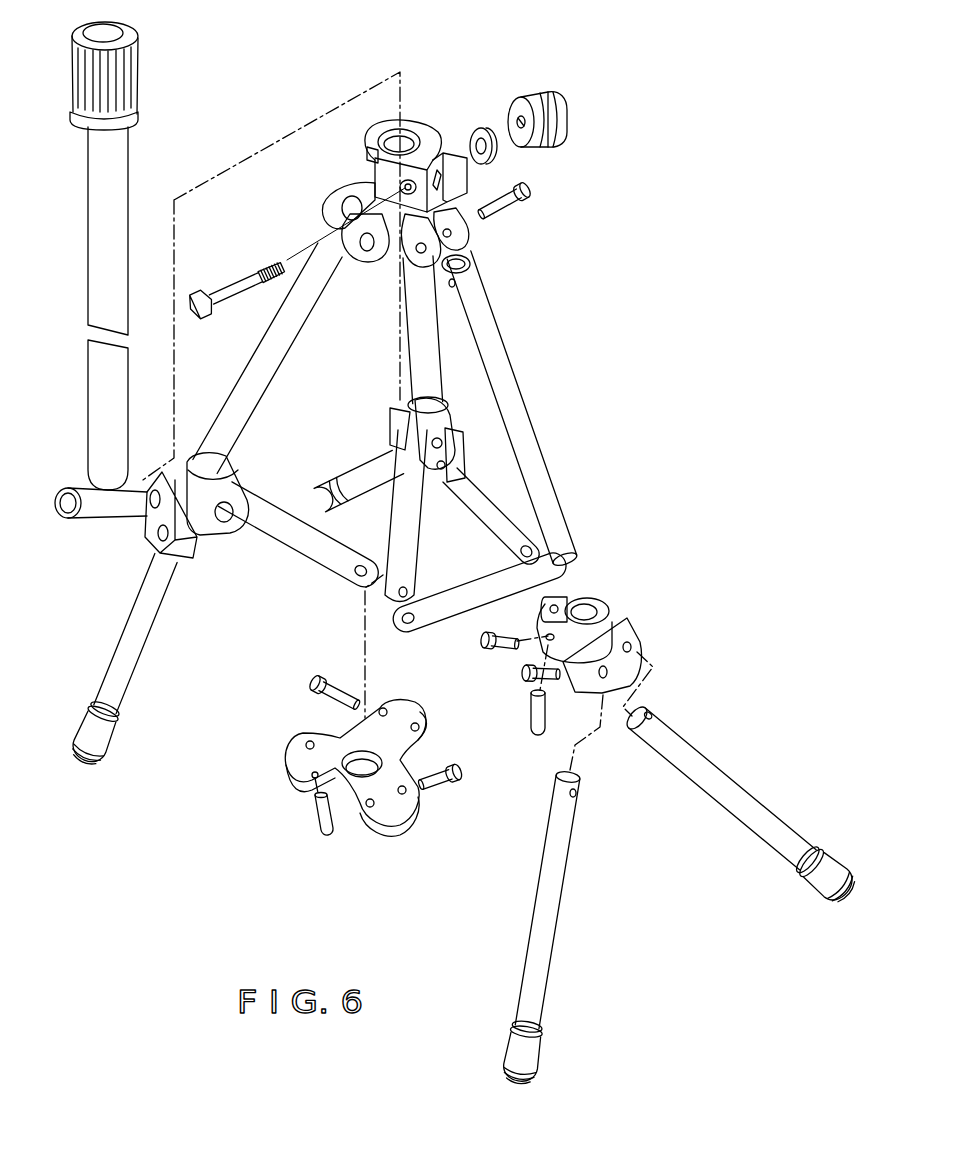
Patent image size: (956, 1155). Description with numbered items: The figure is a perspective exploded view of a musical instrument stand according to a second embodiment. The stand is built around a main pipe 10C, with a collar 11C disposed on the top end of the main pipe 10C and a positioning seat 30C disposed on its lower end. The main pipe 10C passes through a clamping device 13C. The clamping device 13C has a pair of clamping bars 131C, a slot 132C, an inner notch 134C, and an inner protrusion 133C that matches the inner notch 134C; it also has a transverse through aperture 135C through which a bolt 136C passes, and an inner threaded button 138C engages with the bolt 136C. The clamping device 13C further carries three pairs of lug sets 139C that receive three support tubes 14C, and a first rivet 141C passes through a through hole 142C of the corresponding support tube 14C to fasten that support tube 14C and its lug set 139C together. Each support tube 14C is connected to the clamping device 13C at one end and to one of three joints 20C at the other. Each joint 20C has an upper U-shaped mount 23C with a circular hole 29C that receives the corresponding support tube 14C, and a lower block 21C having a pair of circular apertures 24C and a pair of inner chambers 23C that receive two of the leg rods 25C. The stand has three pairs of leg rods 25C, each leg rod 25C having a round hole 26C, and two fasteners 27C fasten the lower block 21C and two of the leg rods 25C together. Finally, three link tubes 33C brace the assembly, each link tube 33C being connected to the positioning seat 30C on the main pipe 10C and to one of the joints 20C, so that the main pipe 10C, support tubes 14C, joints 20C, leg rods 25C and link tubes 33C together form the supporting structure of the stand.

The main pipe 10C is at (130, 198).
The collar 11C is at (123, 100).
The clamping device 13C is at (381, 115).
The support tube 14C is at (530, 420).
The joint 20C is at (626, 589).
The lower block 21C is at (632, 623).
The upper U-shaped mount 23C is at (542, 634).
The circular apertures 24C is at (636, 650).
The leg rod 25C is at (557, 860).
The round hole 26C is at (578, 797).
The fasteners 27C is at (530, 682).
The circular hole 29C is at (582, 598).
The positioning seat 30C is at (384, 818).
The link tube 33C is at (451, 596).
The clamping bars 131C is at (465, 197).
The slot 132C is at (378, 150).
The inner protrusion 133C is at (372, 158).
The inner notch 134C is at (440, 168).
The transverse through aperture 135C is at (405, 191).
The bolt 136C is at (250, 268).
The inner threaded button 138C is at (563, 128).
The lug set 139C is at (475, 259).
The first rivet 141C is at (513, 200).
The through hole 142C is at (450, 286).